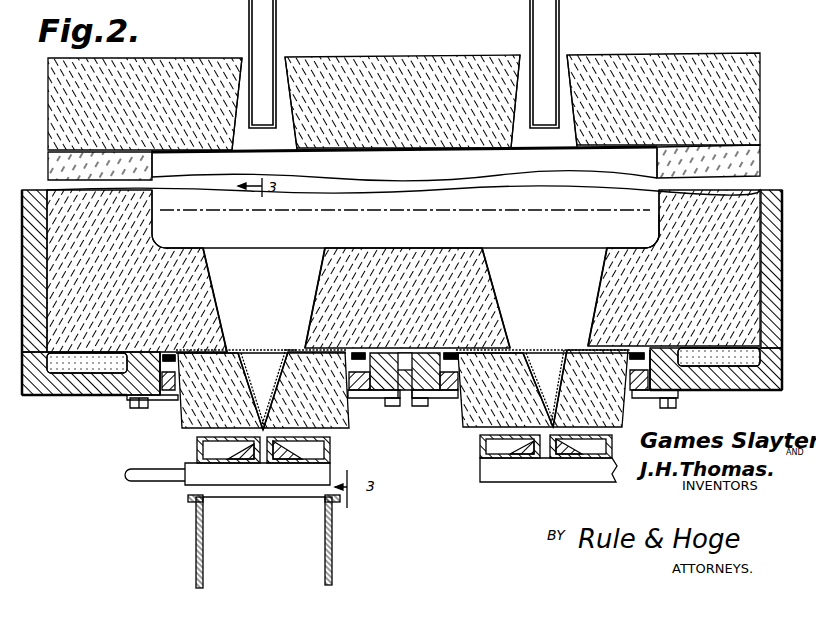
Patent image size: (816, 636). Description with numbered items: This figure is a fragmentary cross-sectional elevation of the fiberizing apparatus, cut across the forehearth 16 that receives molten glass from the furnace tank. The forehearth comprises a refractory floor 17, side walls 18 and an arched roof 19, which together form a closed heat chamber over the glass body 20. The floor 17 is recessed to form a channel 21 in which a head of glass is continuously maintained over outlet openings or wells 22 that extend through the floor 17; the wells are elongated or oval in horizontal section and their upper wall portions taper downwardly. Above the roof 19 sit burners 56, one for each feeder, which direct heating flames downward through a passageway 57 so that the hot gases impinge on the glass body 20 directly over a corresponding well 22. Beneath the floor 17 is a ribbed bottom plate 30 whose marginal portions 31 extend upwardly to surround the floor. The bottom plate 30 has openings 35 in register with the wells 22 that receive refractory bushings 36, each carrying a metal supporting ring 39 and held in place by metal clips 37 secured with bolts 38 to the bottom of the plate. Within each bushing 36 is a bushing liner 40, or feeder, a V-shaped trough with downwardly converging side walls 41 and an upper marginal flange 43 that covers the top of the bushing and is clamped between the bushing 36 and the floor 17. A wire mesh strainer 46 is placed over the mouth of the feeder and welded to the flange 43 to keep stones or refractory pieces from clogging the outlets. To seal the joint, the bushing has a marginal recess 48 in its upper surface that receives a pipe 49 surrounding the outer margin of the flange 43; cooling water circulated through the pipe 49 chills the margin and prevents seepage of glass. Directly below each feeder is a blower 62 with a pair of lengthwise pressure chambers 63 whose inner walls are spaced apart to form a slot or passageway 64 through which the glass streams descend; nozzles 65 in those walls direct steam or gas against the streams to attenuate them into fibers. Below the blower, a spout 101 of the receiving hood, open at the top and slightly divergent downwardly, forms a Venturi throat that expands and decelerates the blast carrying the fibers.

The forehearth 16 is at (426, 56).
The floor 17 is at (391, 262).
The side walls 18 is at (137, 211).
The arched roof 19 is at (452, 136).
The glass body 20 is at (497, 213).
The channel 21 is at (655, 214).
The outlet openings or wells 22 is at (213, 300).
The ribbed bottom plate 30 is at (78, 396).
The marginal portions 31 is at (782, 188).
The openings 35 is at (158, 395).
The refractory bushing 36 is at (185, 426).
The metal clips 37 is at (130, 398).
The bolts 38 is at (386, 402).
The metal supporting ring 39 is at (160, 395).
The bushing liner 40 is at (288, 343).
The side walls 41 is at (287, 384).
The upper marginal flange 43 is at (312, 349).
The strainer 46 is at (248, 352).
The marginal recess 48 is at (340, 352).
The pipe 49 is at (180, 353).
The burners 56 is at (272, 42).
The passageway 57 is at (236, 146).
The blowers 62 is at (330, 457).
The pressure chambers 63 is at (330, 446).
The slot or passageway 64 is at (265, 463).
The nozzles 65 is at (258, 464).
The spouts 101 is at (333, 556).